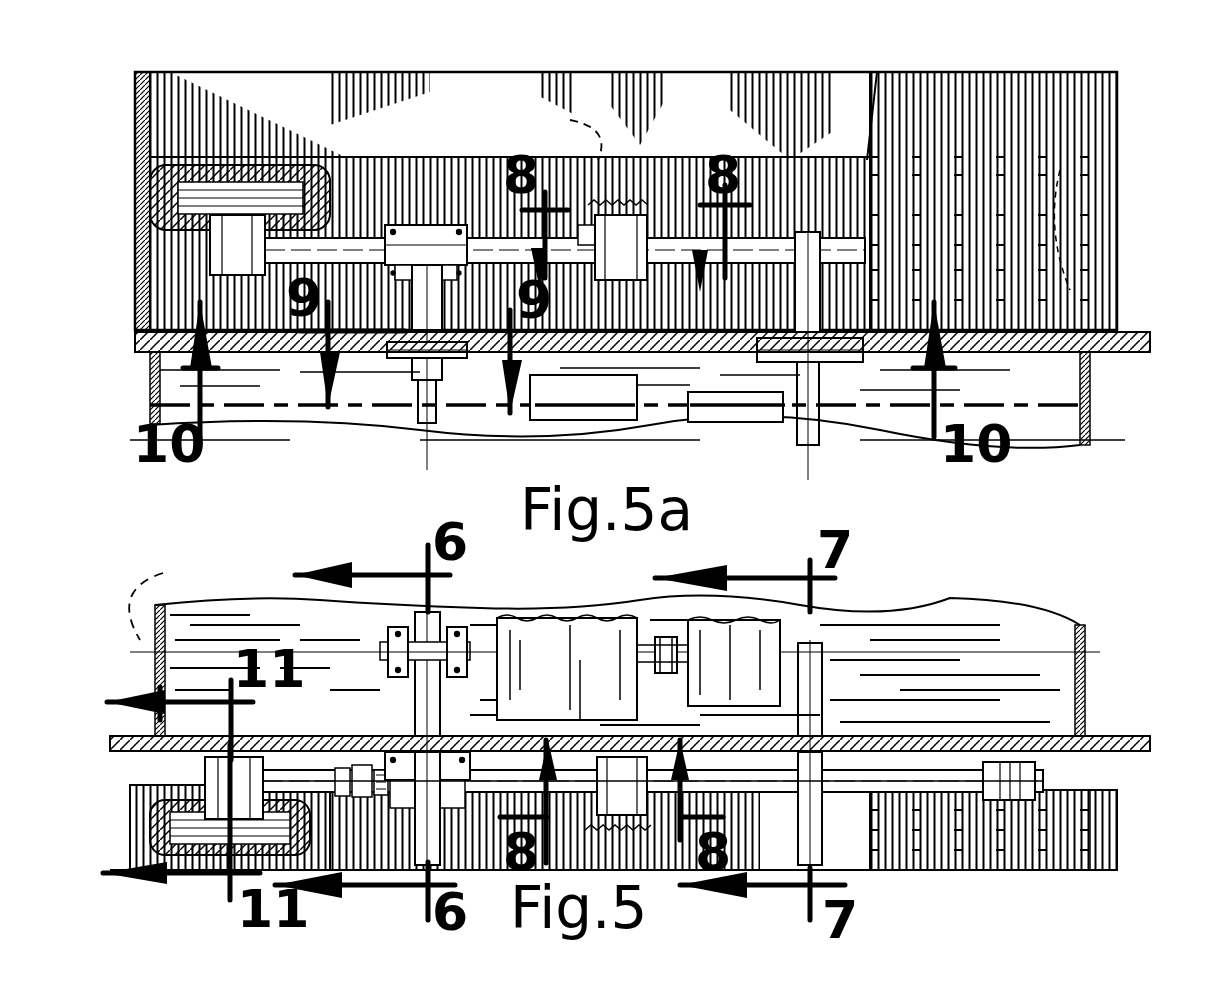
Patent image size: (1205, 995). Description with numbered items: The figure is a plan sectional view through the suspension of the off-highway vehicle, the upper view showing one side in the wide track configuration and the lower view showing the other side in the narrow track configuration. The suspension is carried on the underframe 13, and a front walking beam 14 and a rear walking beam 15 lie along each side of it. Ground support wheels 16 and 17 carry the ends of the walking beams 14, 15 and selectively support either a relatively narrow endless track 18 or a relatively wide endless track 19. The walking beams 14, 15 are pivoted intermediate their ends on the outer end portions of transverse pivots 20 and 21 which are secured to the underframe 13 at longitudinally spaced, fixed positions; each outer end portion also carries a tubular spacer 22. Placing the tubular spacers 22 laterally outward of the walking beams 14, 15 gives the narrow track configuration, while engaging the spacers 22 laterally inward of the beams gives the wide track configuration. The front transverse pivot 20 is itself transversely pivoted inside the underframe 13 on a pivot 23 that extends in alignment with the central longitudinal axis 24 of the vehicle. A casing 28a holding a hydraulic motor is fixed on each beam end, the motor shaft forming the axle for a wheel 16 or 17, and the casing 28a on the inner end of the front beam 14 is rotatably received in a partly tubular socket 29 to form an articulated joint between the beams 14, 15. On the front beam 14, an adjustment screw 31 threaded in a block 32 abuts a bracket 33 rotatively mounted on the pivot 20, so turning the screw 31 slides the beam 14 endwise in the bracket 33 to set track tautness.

In FIG. 5A, the underframe 13 is at (1098, 408).
In FIG. 5, the underframe 13 is at (1100, 720).
In FIG. 5, the front walking beam 14 is at (293, 757).
In FIG. 5, the rear walking beam 15 is at (920, 760).
In FIG. 5A, the ground support wheel 16 is at (1072, 172).
In FIG. 5, the ground support wheel 16 is at (128, 828).
In FIG. 5A, the ground support wheel 17 is at (569, 137).
In FIG. 5, the narrow endless track 18 is at (1092, 788).
In FIG. 5A, the wide endless track 19 is at (1110, 285).
In FIG. 5A, the front transverse pivot 20 is at (417, 413).
In FIG. 5, the front transverse pivot 20 is at (440, 615).
In FIG. 5A, the rear transverse pivot 21 is at (795, 422).
In FIG. 5, the rear transverse pivot 21 is at (823, 703).
In FIG. 5A, the tubular spacer 22 is at (423, 322).
In FIG. 5, the tubular spacer 22 is at (458, 822).
In FIG. 5, the pivot 23 is at (498, 604).
In FIG. 5, the central longitudinal axis 24 is at (161, 598).
In FIG. 5A, the casing 28a is at (140, 247).
In FIG. 5, the casing 28a is at (207, 770).
In FIG. 5A, the socket 29 is at (640, 268).
In FIG. 5, the adjustment screw 31 is at (330, 757).
In FIG. 5, the threaded block 32 is at (367, 757).
In FIG. 5A, the bracket 33 is at (448, 235).